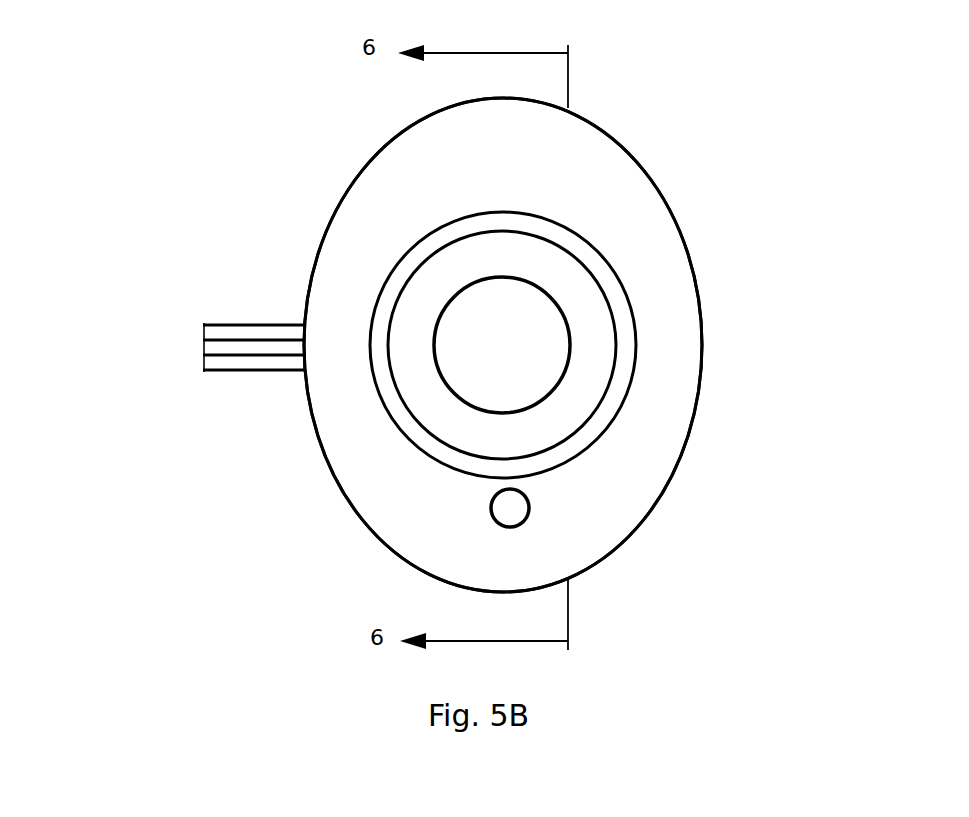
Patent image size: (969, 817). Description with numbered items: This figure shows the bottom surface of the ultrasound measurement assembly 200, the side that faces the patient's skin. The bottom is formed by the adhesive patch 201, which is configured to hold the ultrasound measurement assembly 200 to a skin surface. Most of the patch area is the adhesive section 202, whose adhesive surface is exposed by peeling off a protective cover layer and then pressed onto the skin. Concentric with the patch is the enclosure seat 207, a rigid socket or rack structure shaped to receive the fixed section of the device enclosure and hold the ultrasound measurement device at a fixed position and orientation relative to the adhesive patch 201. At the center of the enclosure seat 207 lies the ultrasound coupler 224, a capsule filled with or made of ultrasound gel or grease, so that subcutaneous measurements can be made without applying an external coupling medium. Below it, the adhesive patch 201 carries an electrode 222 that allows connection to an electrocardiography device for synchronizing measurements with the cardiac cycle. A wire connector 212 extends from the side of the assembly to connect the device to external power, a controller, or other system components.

The ultrasound measurement assembly 200 is at (180, 182).
The adhesive patch 201 is at (718, 342).
The adhesive section 202 is at (368, 228).
The enclosure seat 207 is at (380, 297).
The wire connector 212 is at (275, 370).
The electrode 222 is at (530, 512).
The ultrasound coupler 224 is at (558, 317).